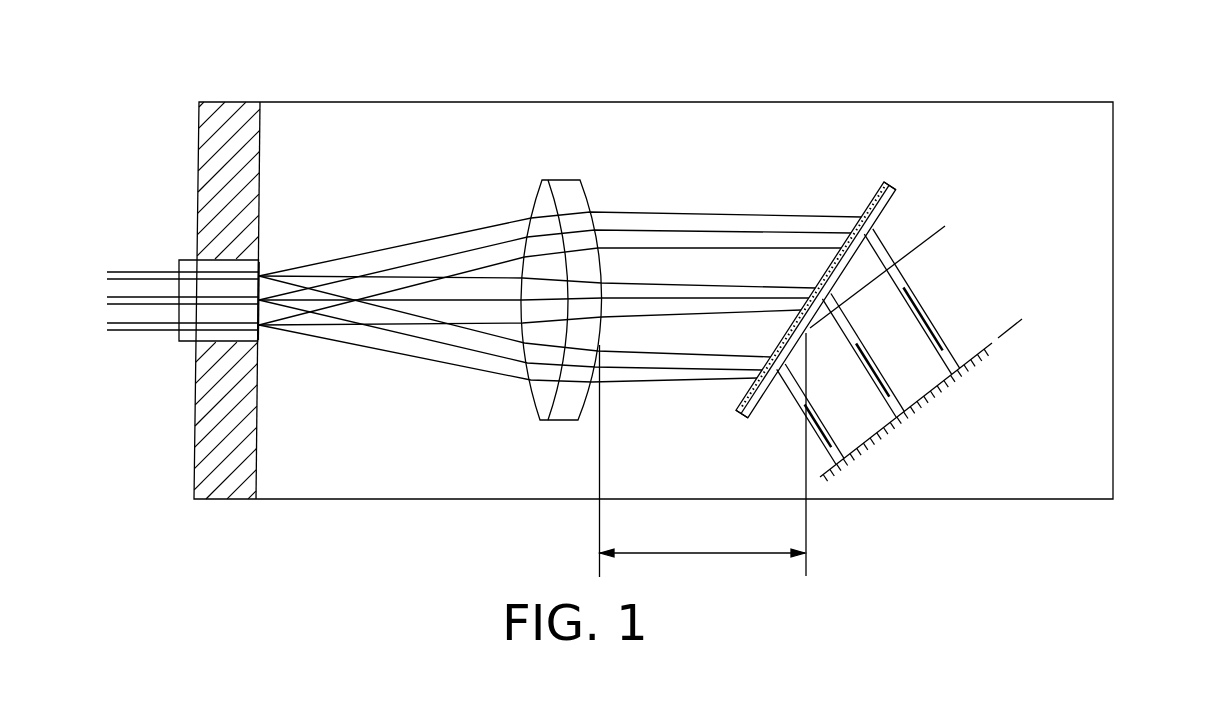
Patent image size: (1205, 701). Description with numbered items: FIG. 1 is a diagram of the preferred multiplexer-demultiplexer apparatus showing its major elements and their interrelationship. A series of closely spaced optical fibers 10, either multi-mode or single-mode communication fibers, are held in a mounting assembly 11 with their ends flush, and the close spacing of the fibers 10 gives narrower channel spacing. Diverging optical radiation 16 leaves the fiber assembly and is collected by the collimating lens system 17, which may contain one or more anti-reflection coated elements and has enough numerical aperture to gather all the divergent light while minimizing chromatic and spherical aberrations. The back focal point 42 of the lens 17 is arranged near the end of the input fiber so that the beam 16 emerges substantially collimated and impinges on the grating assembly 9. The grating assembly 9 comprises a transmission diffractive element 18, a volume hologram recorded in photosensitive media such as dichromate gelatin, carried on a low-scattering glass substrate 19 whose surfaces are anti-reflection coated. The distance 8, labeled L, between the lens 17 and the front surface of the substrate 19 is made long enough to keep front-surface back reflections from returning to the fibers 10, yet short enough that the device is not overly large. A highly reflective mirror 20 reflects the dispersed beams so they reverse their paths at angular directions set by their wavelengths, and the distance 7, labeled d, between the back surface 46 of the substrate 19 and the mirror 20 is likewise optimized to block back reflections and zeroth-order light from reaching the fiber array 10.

The optical fiber array 10 is at (144, 262).
The mounting assembly 11 is at (185, 260).
The back focal point 42 is at (268, 263).
The diverging optical radiation 16 is at (404, 238).
The collimating lens system 17 is at (564, 174).
The diffractive element 18 is at (898, 180).
The grating assembly 9 is at (855, 202).
The back surface of the substrate 46 is at (777, 409).
The substrate 19 is at (877, 175).
The distance d 7 is at (1000, 260).
The highly reflective mirror 20 is at (1000, 345).
The distance L 8 is at (741, 558).